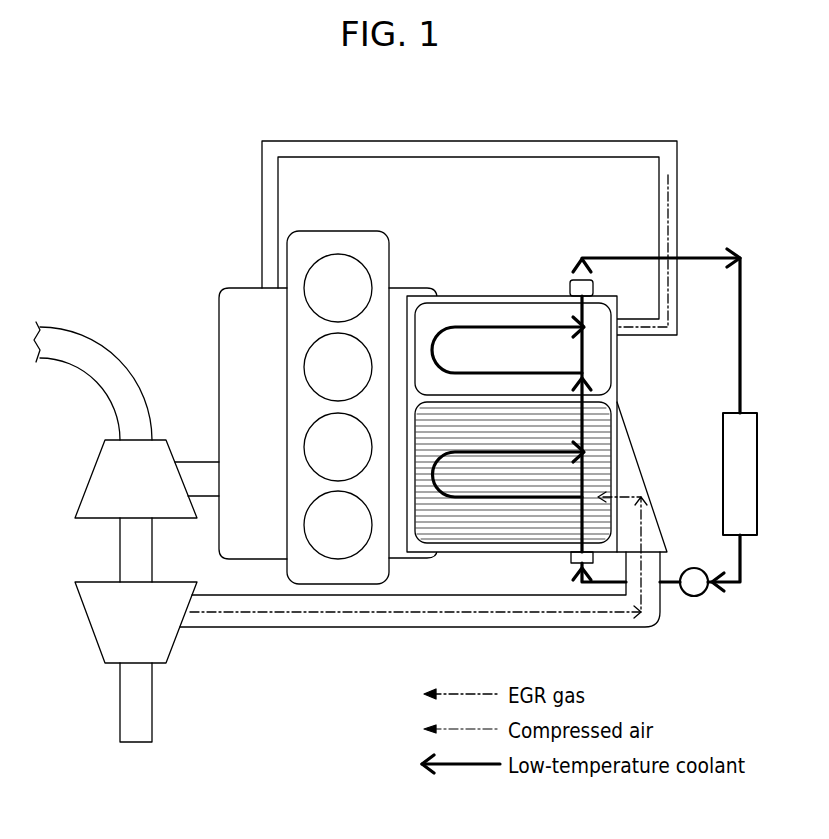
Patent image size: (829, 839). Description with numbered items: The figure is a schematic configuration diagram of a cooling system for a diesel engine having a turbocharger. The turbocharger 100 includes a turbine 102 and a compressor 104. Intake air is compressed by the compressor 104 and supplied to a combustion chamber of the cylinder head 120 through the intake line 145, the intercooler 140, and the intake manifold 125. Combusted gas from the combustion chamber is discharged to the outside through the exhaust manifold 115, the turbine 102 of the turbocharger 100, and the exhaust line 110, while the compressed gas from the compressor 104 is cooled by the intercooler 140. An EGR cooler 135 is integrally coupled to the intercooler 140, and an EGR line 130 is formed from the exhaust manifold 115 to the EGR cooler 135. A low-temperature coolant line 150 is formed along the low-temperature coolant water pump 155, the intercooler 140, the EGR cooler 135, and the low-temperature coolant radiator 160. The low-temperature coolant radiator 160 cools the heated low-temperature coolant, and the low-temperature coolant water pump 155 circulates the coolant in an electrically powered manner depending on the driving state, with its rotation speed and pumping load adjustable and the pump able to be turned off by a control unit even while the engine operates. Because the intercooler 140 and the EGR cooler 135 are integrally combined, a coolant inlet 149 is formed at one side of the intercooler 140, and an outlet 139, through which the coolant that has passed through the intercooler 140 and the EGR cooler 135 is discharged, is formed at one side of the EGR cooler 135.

The turbocharger 100 is at (136, 575).
The turbine 102 is at (96, 480).
The compressor 104 is at (163, 635).
The exhaust line 110 is at (85, 340).
The exhaust manifold 115 is at (238, 302).
The cylinder head 120 is at (335, 229).
The intake manifold 125 is at (400, 292).
The EGR line 130 is at (496, 158).
The EGR cooler 135 is at (496, 314).
The outlet 139 is at (560, 280).
The intercooler 140 is at (598, 422).
The intake line 145 is at (482, 604).
The coolant inlet 149 is at (571, 560).
The low-temperature coolant line 150 is at (738, 340).
The low-temperature coolant water pump 155 is at (694, 598).
The low-temperature coolant radiator 160 is at (731, 466).